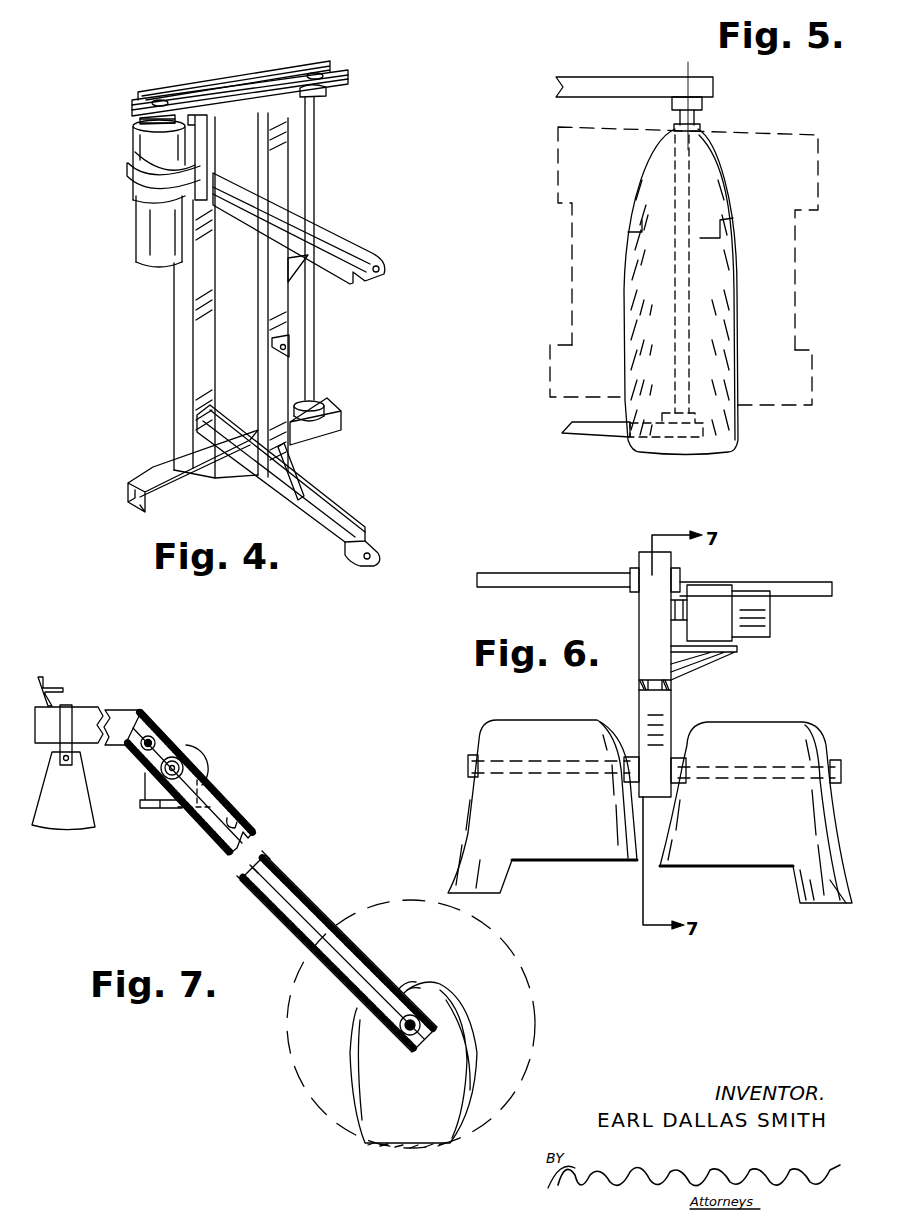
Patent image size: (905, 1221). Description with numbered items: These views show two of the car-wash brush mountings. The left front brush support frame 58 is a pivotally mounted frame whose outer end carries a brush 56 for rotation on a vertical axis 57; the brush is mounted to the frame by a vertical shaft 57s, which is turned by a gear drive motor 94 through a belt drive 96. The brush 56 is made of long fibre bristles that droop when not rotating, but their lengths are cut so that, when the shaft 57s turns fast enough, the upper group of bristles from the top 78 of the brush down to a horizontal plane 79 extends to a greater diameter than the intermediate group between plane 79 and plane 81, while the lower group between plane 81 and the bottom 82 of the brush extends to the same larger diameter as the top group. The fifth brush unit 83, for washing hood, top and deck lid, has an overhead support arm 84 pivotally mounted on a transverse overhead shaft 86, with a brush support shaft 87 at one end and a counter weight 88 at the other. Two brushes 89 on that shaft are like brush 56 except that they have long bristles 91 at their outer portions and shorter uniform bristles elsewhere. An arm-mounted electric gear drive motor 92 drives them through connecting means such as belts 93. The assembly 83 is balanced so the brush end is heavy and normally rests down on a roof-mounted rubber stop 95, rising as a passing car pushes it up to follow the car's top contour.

In FIG. 5, the brush 56 is at (720, 226).
In FIG. 5, the vertical axis 57 is at (690, 69).
In FIG. 4, the vertical shaft 57s is at (318, 125).
In FIG. 5, the vertical shaft 57s is at (697, 120).
In FIG. 4, the frame 58 is at (266, 68).
In FIG. 5, the frame 58 is at (578, 85).
In FIG. 5, the top of the brush 78 is at (675, 126).
In FIG. 5, the horizontal plane 79 is at (558, 208).
In FIG. 5, the plane 81 is at (570, 345).
In FIG. 5, the bottom of the brush 82 is at (598, 402).
In FIG. 6, the fifth brush unit 83 is at (768, 700).
In FIG. 6, the overhead support arm 84 is at (661, 712).
In FIG. 7, the overhead support arm 84 is at (312, 895).
In FIG. 6, the transverse overhead shaft 86 is at (763, 581).
In FIG. 7, the transverse overhead shaft 86 is at (150, 728).
In FIG. 6, the brush support shaft 87 is at (840, 770).
In FIG. 7, the counter weight 88 is at (58, 822).
In FIG. 6, the brushes 89 is at (556, 722).
In FIG. 7, the brushes 89 is at (443, 985).
In FIG. 6, the long bristles 91 is at (810, 886).
In FIG. 6, the electric gear drive motor 92 is at (720, 616).
In FIG. 7, the electric gear drive motor 92 is at (183, 752).
In FIG. 7, the belts 93 is at (240, 826).
In FIG. 4, the gear drive motor 94 is at (143, 232).
In FIG. 7, the rubber stop 95 is at (62, 692).
In FIG. 4, the belt drive 96 is at (197, 97).